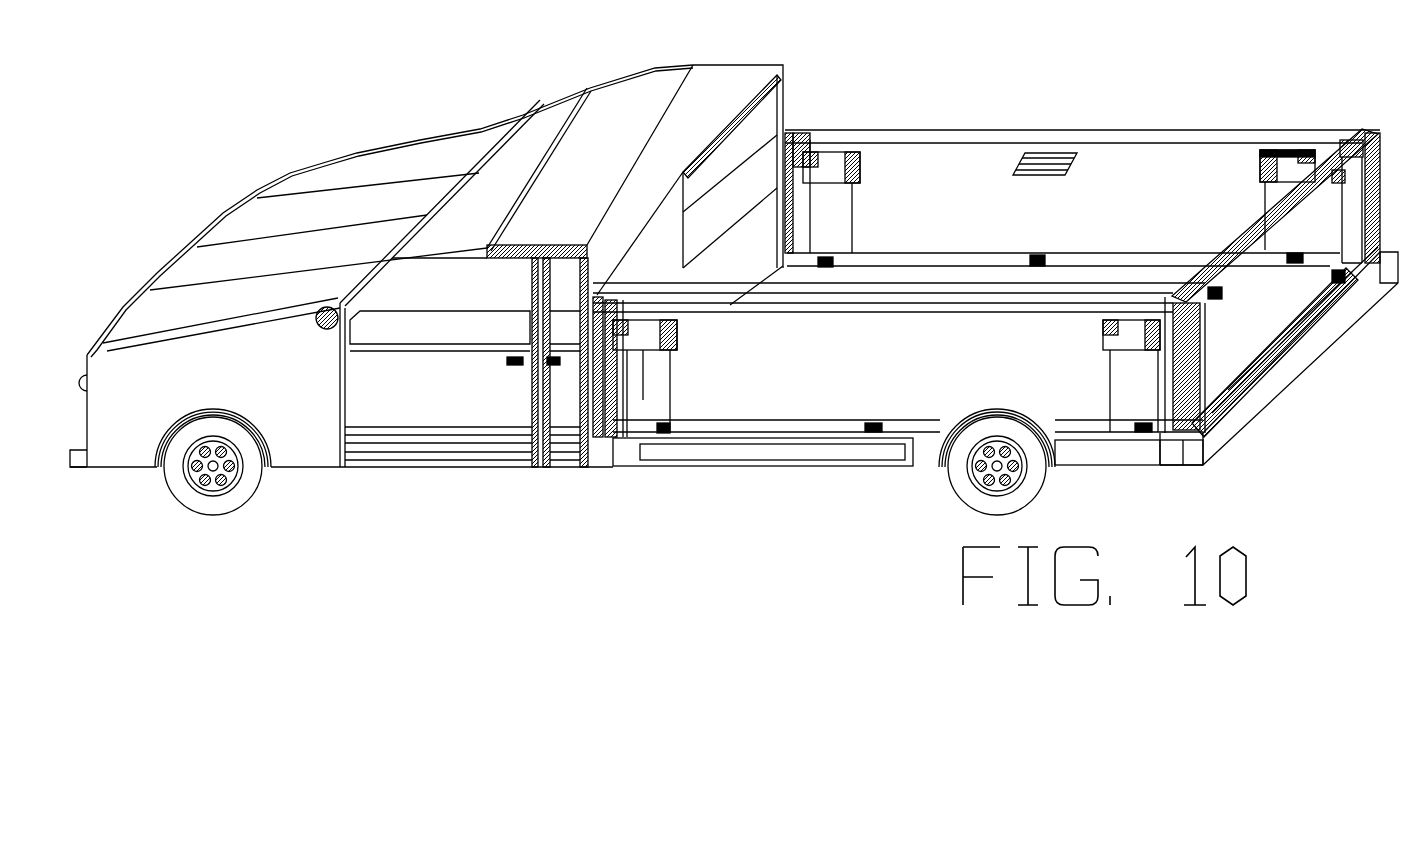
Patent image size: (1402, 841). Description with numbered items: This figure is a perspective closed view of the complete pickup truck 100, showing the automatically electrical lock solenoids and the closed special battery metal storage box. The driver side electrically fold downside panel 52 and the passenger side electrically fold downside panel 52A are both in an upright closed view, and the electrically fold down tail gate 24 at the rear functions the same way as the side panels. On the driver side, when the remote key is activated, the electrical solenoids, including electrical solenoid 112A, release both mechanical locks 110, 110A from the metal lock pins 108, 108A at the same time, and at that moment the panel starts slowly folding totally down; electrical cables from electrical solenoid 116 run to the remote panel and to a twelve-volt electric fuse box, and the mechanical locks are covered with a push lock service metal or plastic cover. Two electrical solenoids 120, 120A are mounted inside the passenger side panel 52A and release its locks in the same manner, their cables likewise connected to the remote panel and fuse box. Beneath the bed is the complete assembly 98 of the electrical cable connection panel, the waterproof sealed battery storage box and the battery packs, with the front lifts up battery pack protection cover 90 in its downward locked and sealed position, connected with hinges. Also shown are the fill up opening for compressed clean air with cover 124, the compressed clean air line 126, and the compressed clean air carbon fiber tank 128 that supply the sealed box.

The electrically fold down tail gate 24 is at (1263, 303).
The driver side electrically fold downside panel 52 is at (1052, 388).
The passenger side electrically fold downside panel 52A is at (1042, 135).
The front lifts up battery pack protection cover 90 is at (778, 467).
The complete assembly 98 is at (870, 448).
The complete pickup truck 100 is at (677, 88).
The metal lock pin 108 is at (604, 336).
The metal lock pin 108A is at (600, 333).
The mechanical lock 110 is at (1217, 407).
The mechanical lock 110A is at (600, 368).
The electrical solenoid 112A is at (673, 328).
The electrical solenoid 116 is at (670, 403).
The electrical solenoid 120 is at (862, 170).
The electrical solenoid 120A is at (1260, 158).
The fill up opening for compressed clean air with cover 124 is at (598, 372).
The compressed clean air line 126 is at (600, 375).
The compressed clean air carbon fiber tank 128 is at (643, 400).